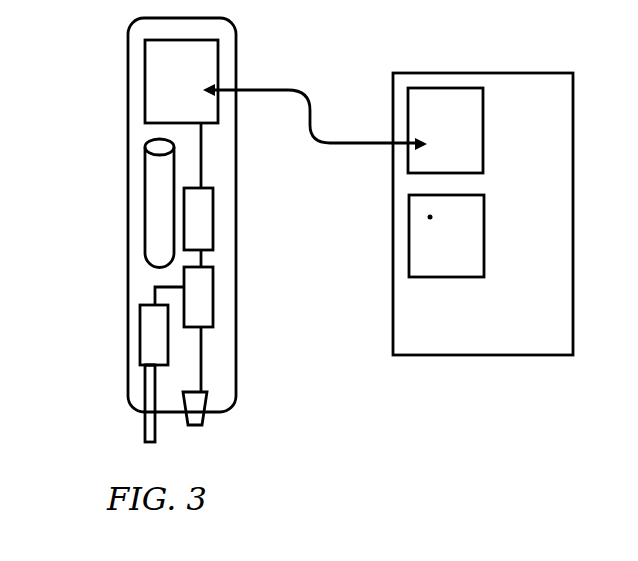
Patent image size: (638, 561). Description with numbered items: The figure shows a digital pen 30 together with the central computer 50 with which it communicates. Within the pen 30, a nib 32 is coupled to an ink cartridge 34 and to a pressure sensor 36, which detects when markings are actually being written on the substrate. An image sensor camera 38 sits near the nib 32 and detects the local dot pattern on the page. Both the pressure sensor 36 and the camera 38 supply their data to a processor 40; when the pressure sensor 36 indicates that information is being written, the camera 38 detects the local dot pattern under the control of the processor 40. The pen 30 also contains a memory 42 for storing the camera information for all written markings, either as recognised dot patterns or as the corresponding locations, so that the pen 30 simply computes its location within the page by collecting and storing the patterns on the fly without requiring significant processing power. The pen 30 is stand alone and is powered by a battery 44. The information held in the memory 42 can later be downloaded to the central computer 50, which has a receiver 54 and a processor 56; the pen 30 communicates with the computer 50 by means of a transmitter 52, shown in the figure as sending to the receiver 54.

The pen 30 is at (106, 68).
The nib 32 is at (145, 428).
The ink cartridge 34 is at (153, 347).
The pressure sensor 36 is at (150, 315).
The image sensor camera 38 is at (207, 410).
The processor 40 is at (213, 308).
The memory 42 is at (213, 232).
The battery 44 is at (160, 228).
The central computer 50 is at (417, 57).
The transmitter 52 is at (145, 103).
The receiver 54 is at (455, 88).
The processor 56 is at (409, 245).